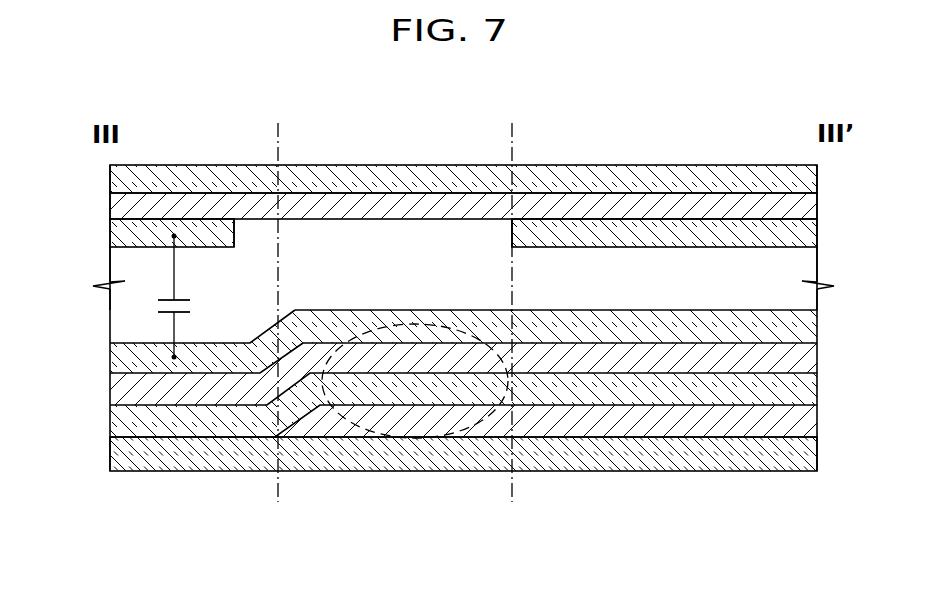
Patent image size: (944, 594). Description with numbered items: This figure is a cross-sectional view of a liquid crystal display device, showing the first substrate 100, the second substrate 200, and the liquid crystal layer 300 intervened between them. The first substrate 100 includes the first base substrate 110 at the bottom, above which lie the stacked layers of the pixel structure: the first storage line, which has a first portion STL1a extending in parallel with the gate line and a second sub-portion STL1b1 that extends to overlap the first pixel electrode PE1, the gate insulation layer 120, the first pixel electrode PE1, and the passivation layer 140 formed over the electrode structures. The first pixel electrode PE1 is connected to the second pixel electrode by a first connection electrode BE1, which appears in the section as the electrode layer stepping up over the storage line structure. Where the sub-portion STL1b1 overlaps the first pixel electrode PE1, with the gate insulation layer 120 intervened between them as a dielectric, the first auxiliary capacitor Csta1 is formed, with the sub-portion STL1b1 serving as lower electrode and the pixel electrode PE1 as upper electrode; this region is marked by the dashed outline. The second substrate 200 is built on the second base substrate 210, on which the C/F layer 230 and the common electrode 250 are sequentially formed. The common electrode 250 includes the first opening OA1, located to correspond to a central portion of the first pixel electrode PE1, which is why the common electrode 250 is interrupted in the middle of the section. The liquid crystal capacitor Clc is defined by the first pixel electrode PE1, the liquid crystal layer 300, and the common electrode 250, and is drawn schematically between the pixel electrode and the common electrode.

The first substrate 100 is at (477, 439).
The first base substrate 110 is at (819, 453).
The gate insulation layer 120 is at (819, 390).
The passivation layer 140 is at (819, 358).
The second substrate 200 is at (500, 164).
The second base substrate 210 is at (819, 176).
The C/F layer 230 is at (819, 203).
The common electrode 250 is at (819, 236).
The liquid crystal layer 300 is at (819, 268).
The first pixel electrode PE1 is at (118, 356).
The first connection electrode BE1 is at (819, 327).
The first portion of first storage line STL1a is at (819, 428).
The second-1 sub-portion of first storage line STL1b1 is at (447, 444).
The first auxiliary capacitor Csta1 is at (341, 419).
The liquid crystal capacitor Clc is at (195, 297).
The first opening OA1 is at (385, 238).